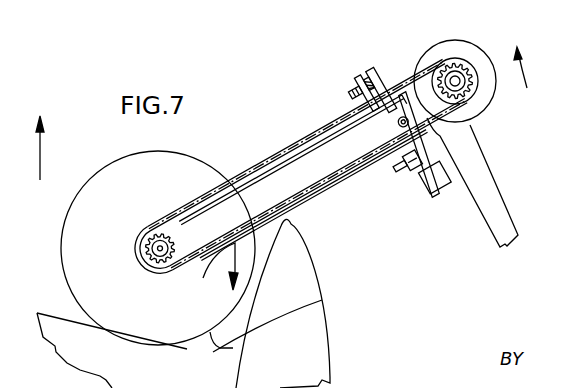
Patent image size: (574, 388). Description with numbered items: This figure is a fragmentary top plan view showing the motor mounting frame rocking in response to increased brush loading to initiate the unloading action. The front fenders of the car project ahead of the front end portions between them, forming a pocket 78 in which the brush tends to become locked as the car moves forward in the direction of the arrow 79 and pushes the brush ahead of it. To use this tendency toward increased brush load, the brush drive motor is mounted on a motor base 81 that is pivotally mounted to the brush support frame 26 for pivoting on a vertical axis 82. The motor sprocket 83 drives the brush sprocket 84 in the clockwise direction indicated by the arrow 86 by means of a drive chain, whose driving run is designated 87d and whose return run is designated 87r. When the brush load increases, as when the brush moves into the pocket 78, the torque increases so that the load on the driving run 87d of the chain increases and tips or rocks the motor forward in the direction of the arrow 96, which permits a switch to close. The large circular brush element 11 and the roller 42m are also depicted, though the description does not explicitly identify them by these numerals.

The drum 11 is at (78, 224).
The brush support frame 26 is at (298, 157).
The roller 42m is at (475, 44).
The pocket 78 is at (322, 300).
The arrow 79 is at (55, 148).
The motor base 81 is at (377, 68).
The vertical axis 82 is at (399, 126).
The motor sprocket 83 is at (453, 62).
The brush sprocket 84 is at (155, 233).
The arrow 86 is at (214, 274).
The driving run 87d is at (241, 178).
The return run 87r is at (300, 190).
The arrow 96 is at (536, 67).